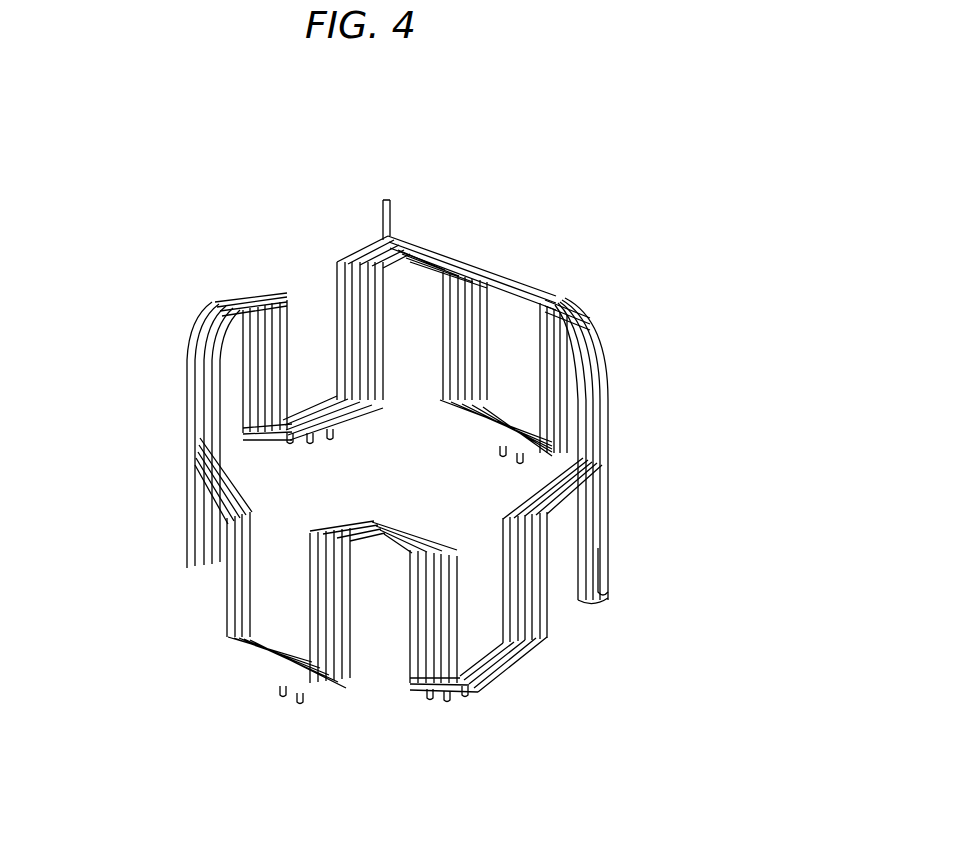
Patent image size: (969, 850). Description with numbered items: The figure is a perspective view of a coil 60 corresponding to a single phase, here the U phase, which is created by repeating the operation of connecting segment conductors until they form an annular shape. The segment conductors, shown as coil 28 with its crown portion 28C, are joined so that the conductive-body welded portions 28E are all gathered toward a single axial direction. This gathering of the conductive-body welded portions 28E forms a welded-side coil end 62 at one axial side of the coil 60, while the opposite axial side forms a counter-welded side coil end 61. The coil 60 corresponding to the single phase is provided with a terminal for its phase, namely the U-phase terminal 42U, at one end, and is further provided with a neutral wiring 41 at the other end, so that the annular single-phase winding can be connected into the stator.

The coil 60 is at (598, 141).
The neutral wiring 41 is at (556, 297).
The U-phase terminal 42U is at (383, 202).
The segment coil 28 is at (457, 557).
The coil crown portion 28C is at (384, 540).
The conductive-body welded portions 28E is at (293, 690).
The counter-welded side coil end 61 is at (312, 544).
The welded-side coil end 62 is at (270, 695).